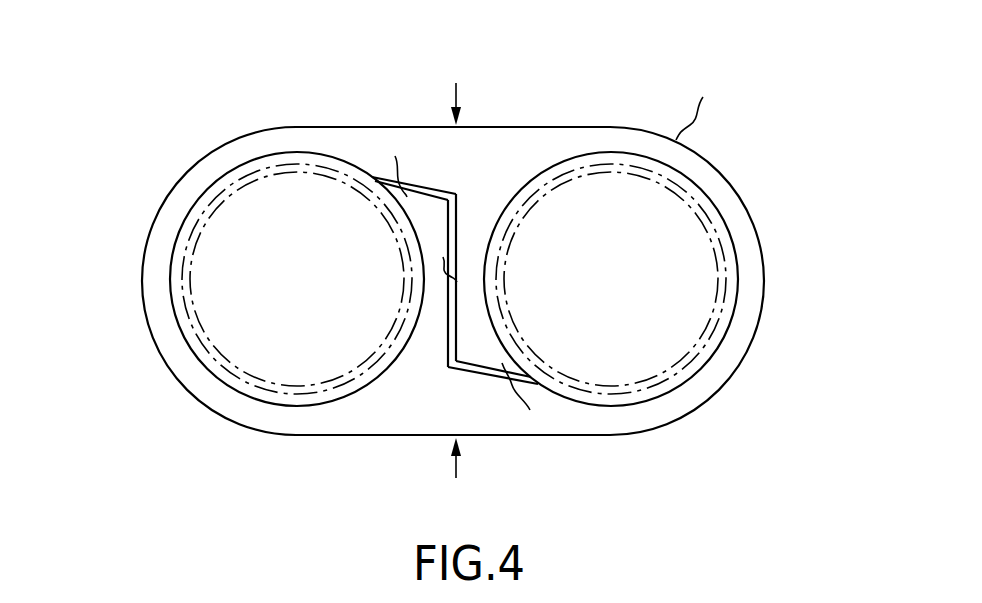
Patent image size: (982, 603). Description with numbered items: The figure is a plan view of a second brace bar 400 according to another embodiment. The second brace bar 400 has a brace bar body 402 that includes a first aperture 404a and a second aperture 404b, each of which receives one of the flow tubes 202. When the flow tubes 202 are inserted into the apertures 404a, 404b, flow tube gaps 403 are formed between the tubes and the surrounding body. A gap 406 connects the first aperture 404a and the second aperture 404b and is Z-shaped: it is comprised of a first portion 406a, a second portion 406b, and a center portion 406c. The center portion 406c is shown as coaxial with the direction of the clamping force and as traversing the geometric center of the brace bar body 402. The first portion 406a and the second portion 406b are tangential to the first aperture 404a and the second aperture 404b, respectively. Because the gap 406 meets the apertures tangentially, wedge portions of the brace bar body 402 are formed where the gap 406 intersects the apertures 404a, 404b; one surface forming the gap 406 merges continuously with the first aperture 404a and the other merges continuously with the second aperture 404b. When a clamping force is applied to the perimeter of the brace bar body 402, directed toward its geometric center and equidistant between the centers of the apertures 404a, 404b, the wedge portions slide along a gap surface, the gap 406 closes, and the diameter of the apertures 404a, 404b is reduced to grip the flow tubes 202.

The second brace bar 400 is at (747, 78).
The brace bar body 402 is at (262, 148).
The first aperture 404a is at (185, 225).
The second aperture 404b is at (712, 207).
The flow tube gaps 403 is at (228, 382).
The flow tubes 202 is at (193, 252).
The gap 406 is at (443, 318).
The first portion 406a is at (436, 179).
The second portion 406b is at (474, 385).
The center portion 406c is at (478, 302).